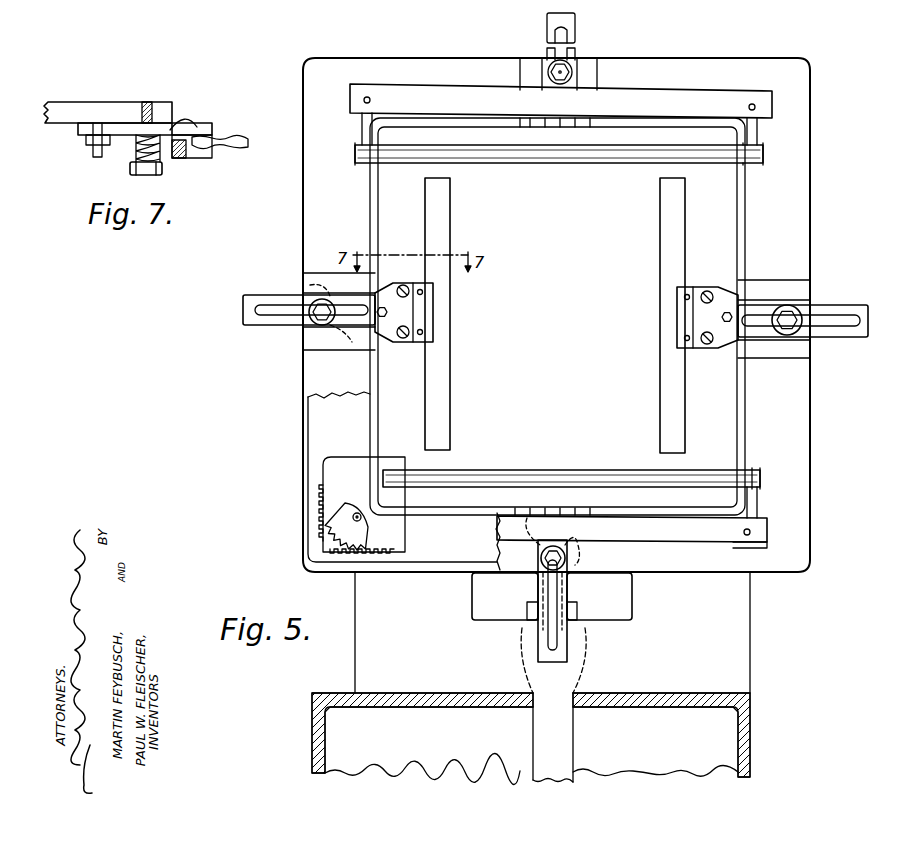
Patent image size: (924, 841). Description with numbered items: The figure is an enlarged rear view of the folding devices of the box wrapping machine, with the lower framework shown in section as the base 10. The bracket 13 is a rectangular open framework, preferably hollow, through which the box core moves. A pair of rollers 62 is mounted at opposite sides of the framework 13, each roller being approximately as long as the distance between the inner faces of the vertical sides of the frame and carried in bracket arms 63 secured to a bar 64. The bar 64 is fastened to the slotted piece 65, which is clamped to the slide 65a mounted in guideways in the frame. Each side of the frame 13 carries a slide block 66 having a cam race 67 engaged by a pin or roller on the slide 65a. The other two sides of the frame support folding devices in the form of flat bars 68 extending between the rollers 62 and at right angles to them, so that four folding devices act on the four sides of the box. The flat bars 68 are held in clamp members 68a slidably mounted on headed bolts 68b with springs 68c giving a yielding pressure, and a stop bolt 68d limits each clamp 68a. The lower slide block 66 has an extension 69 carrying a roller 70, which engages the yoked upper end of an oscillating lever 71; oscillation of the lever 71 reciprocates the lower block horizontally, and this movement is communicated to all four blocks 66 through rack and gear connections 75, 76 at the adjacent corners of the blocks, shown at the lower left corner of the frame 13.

In FIG. 5, the base 10 is at (740, 722).
In FIG. 5, the bracket 13 is at (812, 76).
In FIG. 5, the rollers 62 is at (625, 160).
In FIG. 5, the bracket arms 63 is at (752, 134).
In FIG. 5, the bar 64 is at (725, 95).
In FIG. 5, the slotted piece 65 is at (576, 30).
In FIG. 7, the slotted piece 65 is at (68, 110).
In FIG. 5, the slide 65a is at (578, 63).
In FIG. 5, the slide block 66 is at (312, 420).
In FIG. 5, the cam race 67 is at (322, 290).
In FIG. 5, the flat bars 68 is at (450, 216).
In FIG. 7, the flat bars 68 is at (250, 142).
In FIG. 5, the clamp members 68a is at (725, 293).
In FIG. 7, the clamp members 68a is at (205, 130).
In FIG. 5, the headed bolts 68b is at (707, 344).
In FIG. 7, the headed bolts 68b is at (152, 172).
In FIG. 7, the springs 68c is at (135, 153).
In FIG. 7, the stop bolt 68d is at (92, 148).
In FIG. 5, the extension 69 is at (538, 588).
In FIG. 5, the roller 70 is at (572, 606).
In FIG. 5, the oscillating lever 71 is at (565, 735).
In FIG. 5, the rack 75 is at (320, 496).
In FIG. 5, the gear 76 is at (322, 528).